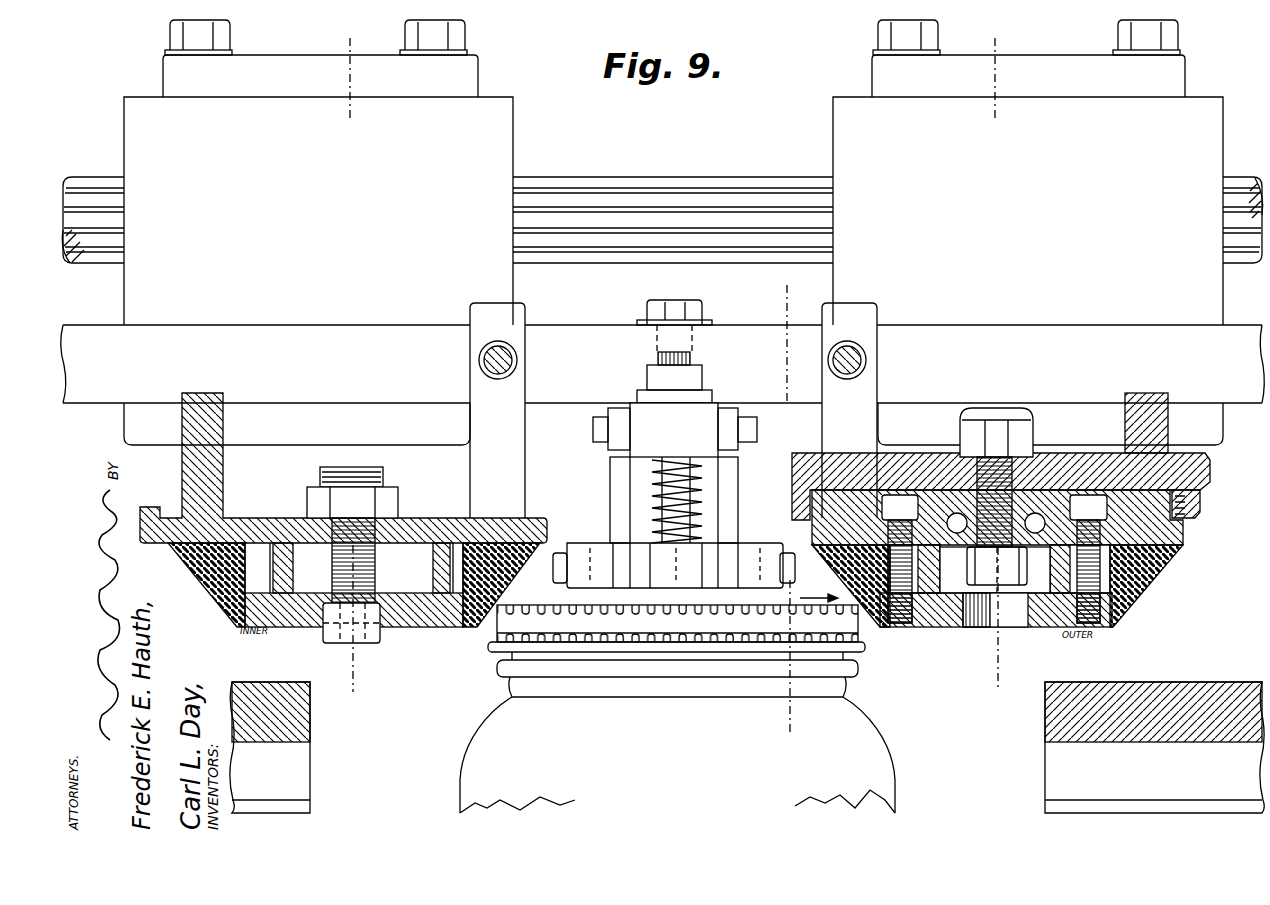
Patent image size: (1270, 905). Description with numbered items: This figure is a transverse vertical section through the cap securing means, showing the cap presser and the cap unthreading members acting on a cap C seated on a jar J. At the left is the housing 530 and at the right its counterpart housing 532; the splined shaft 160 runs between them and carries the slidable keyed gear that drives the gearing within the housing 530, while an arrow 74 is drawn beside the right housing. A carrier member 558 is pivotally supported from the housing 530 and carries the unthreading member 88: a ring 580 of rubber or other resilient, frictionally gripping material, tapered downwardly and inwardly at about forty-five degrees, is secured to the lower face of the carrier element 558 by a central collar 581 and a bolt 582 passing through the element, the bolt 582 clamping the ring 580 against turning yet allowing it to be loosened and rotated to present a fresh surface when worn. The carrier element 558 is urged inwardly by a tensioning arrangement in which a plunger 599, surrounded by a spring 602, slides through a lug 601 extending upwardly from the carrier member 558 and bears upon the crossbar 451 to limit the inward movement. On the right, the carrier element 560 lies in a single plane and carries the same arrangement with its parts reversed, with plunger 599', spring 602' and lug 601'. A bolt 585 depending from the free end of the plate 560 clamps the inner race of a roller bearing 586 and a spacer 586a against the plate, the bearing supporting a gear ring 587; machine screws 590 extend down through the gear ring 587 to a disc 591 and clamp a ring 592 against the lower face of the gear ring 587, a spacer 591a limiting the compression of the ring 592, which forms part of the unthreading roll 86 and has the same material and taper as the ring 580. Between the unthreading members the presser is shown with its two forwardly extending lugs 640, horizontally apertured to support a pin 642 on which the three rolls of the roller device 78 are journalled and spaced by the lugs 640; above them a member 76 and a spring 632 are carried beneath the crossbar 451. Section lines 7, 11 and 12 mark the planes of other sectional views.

The housing 530 is at (488, 152).
The right sealing head block 532 is at (852, 120).
The splined shaft 160 is at (701, 160).
The direction of block movement 74 is at (826, 155).
The plunger 599 is at (475, 324).
The spring 602 is at (462, 340).
The lug 601 is at (465, 410).
The pivot pin (right) 599' is at (879, 324).
The pin bushing (right) 602' is at (908, 338).
The hanger arm (right) 601' is at (891, 410).
The crossbar 451 is at (617, 305).
The section line 7- 7 is at (787, 300).
The cross head 76 is at (606, 427).
The spring 632 is at (652, 470).
The carrier member 558 is at (537, 523).
The ring 580 is at (542, 547).
The lugs 640 is at (640, 547).
The roller device 78 is at (753, 538).
The bolt 582 is at (388, 517).
The pin 642 is at (556, 575).
The central collar 581 is at (408, 600).
The unthreading member 88 is at (480, 630).
The section line 12- 12 is at (378, 48).
The spacer 586a is at (963, 490).
The roller bearing 586 is at (1048, 503).
The carrier member 560 is at (1196, 474).
The gear ring 587 is at (1178, 520).
The ring 592 is at (1177, 573).
The unthreading roll 86 is at (1150, 601).
The machine screws 590 is at (1115, 624).
The bolt 585 is at (998, 557).
The disc 591 is at (1053, 613).
The spacer 591a is at (937, 593).
The section line 11- 11 is at (968, 48).
The cap C is at (870, 648).
The jar J is at (898, 768).